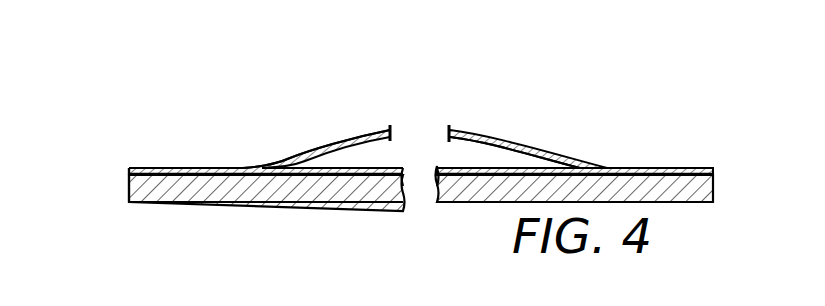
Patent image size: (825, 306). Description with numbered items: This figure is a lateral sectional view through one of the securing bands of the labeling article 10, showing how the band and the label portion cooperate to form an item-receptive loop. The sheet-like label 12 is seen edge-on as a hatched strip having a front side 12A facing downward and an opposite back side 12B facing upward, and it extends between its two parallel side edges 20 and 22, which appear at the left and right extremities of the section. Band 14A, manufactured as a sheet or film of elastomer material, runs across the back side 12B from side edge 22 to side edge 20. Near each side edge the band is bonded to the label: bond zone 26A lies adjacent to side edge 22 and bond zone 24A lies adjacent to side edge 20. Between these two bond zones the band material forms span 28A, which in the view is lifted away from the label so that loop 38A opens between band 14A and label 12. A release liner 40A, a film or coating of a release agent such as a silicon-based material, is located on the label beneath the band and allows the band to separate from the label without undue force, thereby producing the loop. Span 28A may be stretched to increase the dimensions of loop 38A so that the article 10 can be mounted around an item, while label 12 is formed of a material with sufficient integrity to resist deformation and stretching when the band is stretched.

The article 10 is at (724, 99).
The label 12 is at (373, 190).
The front side 12A is at (156, 202).
The back side 12B is at (139, 166).
The band 14A is at (457, 100).
The side edge 20 is at (714, 183).
The side edge 22 is at (129, 190).
The bond zone 24A is at (712, 140).
The bond zone 26A is at (227, 140).
The span 28A is at (351, 131).
The loop 38A is at (493, 148).
The release liner 40A is at (337, 168).